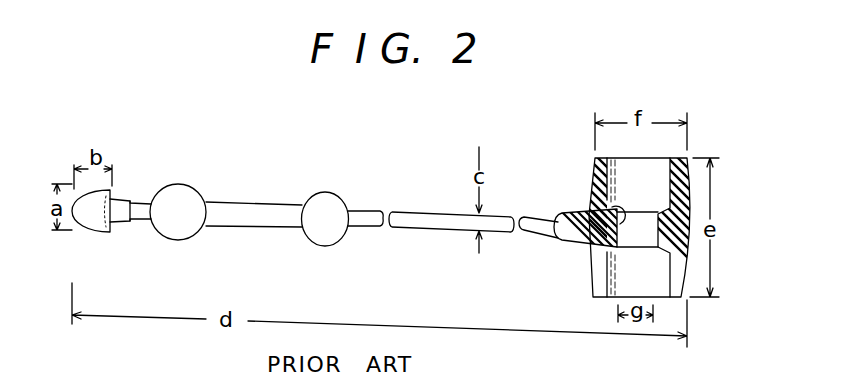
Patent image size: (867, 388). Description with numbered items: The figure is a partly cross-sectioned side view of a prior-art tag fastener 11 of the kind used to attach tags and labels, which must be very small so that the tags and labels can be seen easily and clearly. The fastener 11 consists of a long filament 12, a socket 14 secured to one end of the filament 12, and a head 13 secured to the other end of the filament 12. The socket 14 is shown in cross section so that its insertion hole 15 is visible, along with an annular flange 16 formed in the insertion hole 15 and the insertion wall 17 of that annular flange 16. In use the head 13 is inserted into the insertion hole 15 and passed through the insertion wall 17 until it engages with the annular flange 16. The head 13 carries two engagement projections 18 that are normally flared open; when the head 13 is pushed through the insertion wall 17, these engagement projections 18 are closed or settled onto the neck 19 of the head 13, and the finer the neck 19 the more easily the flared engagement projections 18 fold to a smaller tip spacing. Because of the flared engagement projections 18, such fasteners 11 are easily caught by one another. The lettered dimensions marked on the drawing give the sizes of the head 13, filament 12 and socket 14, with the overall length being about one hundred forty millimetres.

The fastener 11 is at (374, 197).
The filament 12 is at (435, 231).
The head 13 is at (93, 234).
The socket 14 is at (699, 175).
The insertion hole 15 is at (602, 272).
The annular flange 16 is at (661, 246).
The insertion wall 17 is at (613, 208).
The engagement projections 18 is at (117, 226).
The neck 19 is at (143, 222).